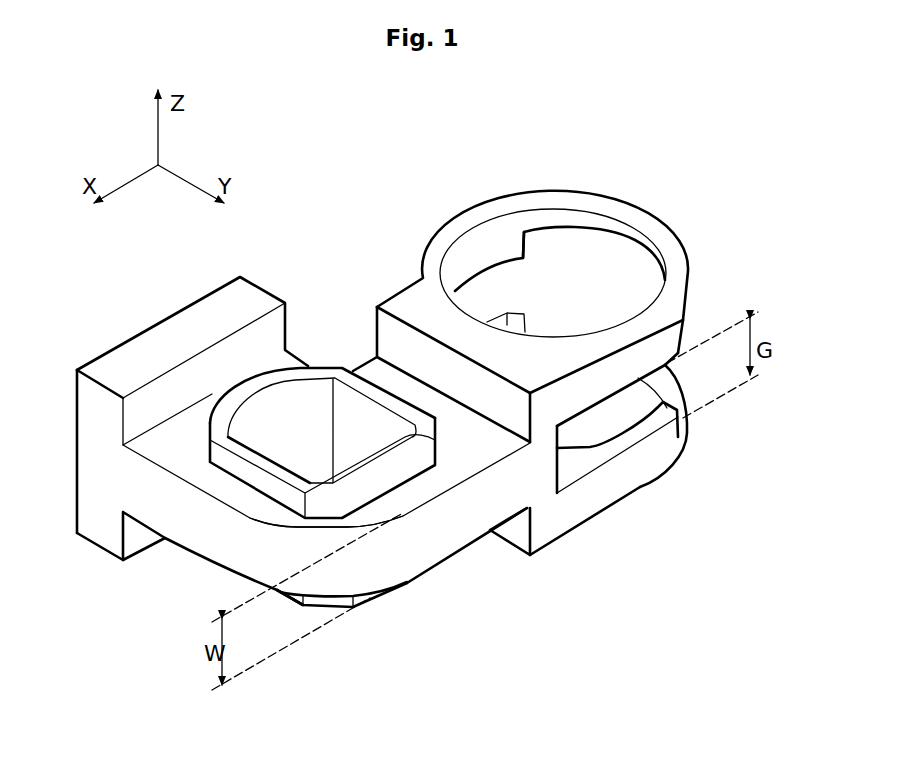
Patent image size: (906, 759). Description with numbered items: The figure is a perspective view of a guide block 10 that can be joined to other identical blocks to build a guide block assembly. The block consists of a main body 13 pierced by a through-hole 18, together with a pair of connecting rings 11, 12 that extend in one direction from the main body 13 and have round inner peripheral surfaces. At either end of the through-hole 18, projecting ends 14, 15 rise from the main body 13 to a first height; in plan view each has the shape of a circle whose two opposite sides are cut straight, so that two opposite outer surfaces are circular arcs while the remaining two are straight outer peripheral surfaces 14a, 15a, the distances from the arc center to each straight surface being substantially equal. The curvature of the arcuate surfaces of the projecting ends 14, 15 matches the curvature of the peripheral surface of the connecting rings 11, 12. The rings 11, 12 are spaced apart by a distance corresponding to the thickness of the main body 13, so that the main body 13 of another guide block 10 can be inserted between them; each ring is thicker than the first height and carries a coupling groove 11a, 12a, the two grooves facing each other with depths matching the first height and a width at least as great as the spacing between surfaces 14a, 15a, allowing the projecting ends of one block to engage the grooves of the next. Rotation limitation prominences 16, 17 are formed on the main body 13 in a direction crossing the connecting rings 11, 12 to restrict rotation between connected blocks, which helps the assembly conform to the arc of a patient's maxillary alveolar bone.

The guide block 10 is at (306, 202).
The connecting ring 11 is at (598, 377).
The coupling groove 11a is at (597, 243).
The connecting ring 12 is at (647, 477).
The coupling groove 12a is at (684, 428).
The main body 13 is at (188, 522).
The projecting end 14 is at (333, 364).
The straight outer peripheral surface 14a is at (390, 397).
The projecting end 15 is at (353, 598).
The straight outer peripheral surface 15a is at (287, 602).
The rotation limitation prominence 16 is at (221, 300).
The rotation limitation prominence 17 is at (128, 538).
The through-hole 18 is at (249, 417).